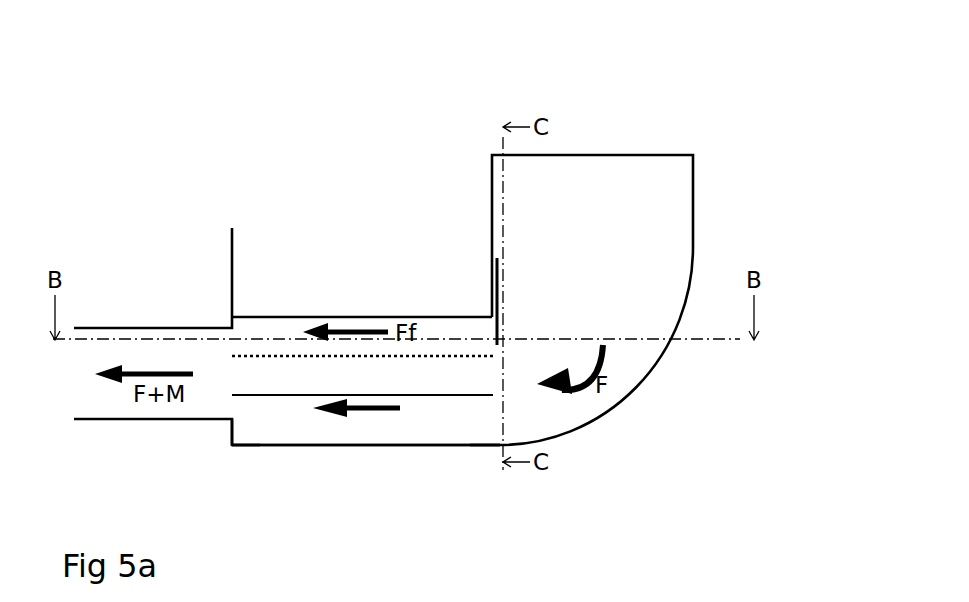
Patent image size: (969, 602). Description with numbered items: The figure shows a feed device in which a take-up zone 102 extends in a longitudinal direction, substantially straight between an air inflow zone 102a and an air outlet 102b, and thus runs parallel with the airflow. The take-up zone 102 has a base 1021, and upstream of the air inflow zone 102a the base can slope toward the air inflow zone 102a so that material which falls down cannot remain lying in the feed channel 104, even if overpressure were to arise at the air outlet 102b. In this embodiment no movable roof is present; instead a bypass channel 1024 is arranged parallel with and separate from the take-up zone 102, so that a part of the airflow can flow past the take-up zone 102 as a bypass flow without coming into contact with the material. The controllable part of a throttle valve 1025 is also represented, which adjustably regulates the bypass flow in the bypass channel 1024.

The feed channel 104 is at (592, 213).
The take-up zone 102 is at (417, 422).
The base 1021 is at (348, 447).
The bypass channel 1024 is at (287, 380).
The throttle valve 1025 is at (497, 292).
The air inflow zone 102a is at (487, 422).
The air outlet 102b is at (236, 412).